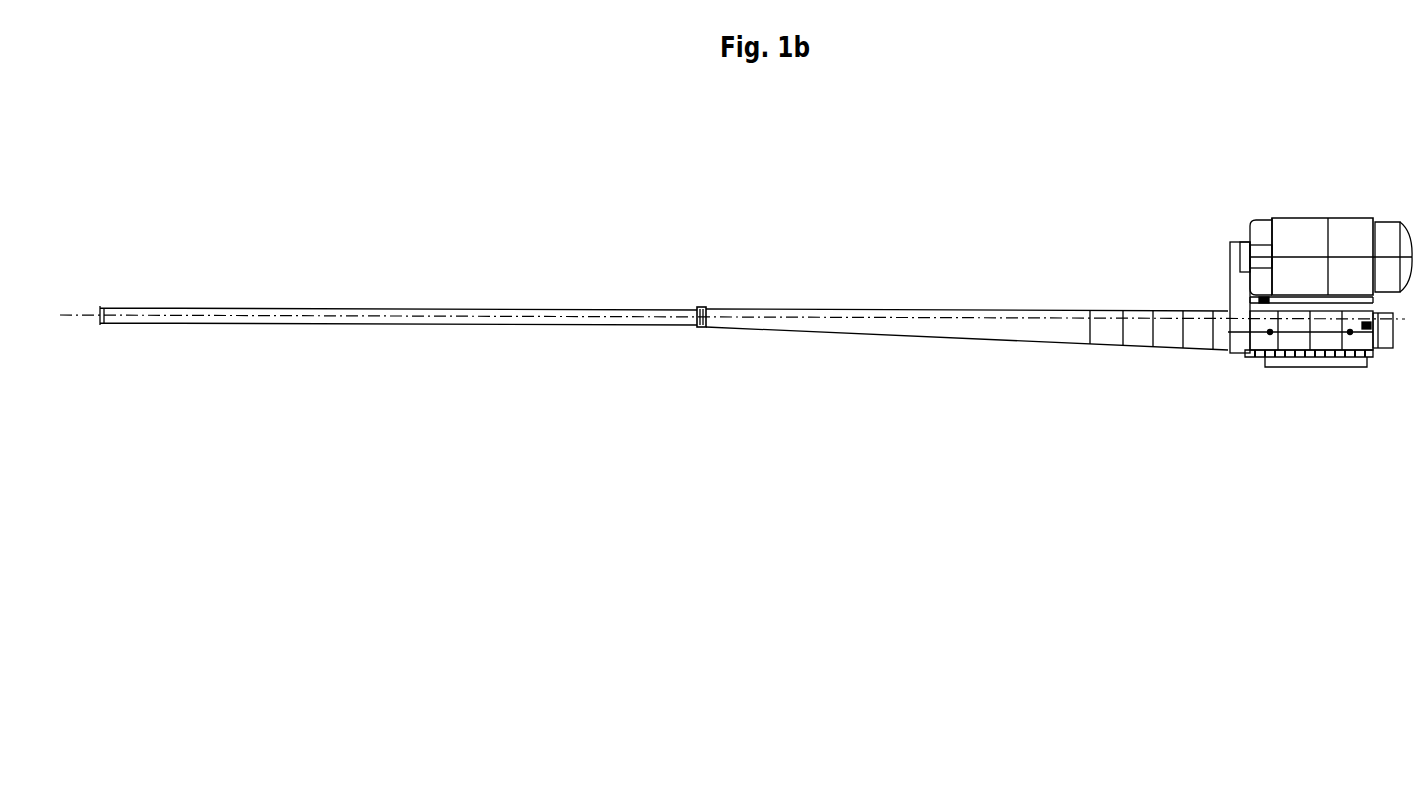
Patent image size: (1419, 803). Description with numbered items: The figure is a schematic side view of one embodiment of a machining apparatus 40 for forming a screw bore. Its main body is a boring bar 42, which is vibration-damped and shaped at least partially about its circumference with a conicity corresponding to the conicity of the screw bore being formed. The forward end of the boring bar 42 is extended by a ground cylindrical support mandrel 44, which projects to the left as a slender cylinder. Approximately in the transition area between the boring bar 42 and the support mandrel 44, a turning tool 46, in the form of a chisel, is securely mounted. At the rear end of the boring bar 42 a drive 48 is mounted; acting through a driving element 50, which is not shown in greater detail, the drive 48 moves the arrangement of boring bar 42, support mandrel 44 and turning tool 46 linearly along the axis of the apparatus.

The machining apparatus 40 is at (876, 250).
The boring bar 42 is at (947, 335).
The support mandrel 44 is at (313, 322).
The turning tool 46 is at (702, 307).
The drive 48 is at (1301, 230).
The driving element 50 is at (1235, 242).